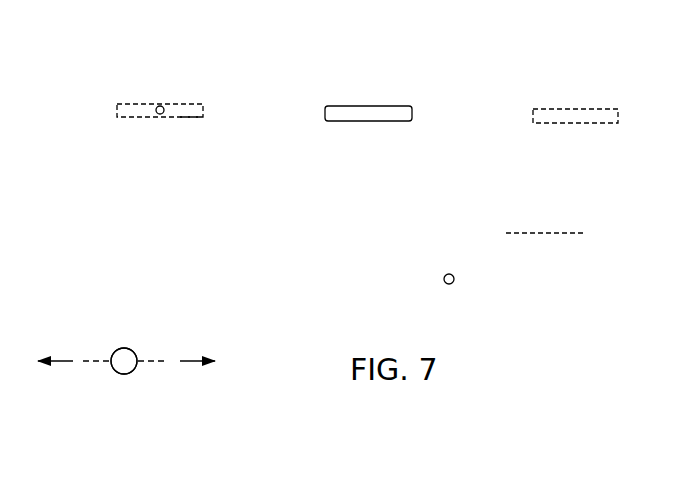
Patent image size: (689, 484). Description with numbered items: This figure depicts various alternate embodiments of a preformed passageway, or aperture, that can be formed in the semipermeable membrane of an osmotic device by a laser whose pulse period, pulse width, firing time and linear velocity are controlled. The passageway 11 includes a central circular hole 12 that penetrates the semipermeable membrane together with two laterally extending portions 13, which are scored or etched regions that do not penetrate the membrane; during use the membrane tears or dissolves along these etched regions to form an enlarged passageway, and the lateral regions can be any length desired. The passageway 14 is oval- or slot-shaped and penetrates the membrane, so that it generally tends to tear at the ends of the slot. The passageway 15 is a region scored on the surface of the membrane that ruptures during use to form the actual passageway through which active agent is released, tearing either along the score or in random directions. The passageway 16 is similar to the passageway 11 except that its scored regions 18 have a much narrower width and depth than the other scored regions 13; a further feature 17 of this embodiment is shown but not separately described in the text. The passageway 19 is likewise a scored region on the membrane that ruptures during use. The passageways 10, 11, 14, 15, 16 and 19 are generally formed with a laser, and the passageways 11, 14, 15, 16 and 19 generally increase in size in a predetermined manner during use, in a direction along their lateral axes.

The passageway 10 is at (438, 273).
The passageway 11 is at (122, 138).
The central circular hole 12 is at (161, 118).
The laterally extending portions 13 is at (193, 125).
The passageway 14 is at (378, 100).
The passageway 15 is at (557, 103).
The passageway 16 is at (163, 332).
The circle upper portion 17 is at (115, 343).
The scored regions 18 is at (144, 367).
The passageway 19 is at (565, 249).